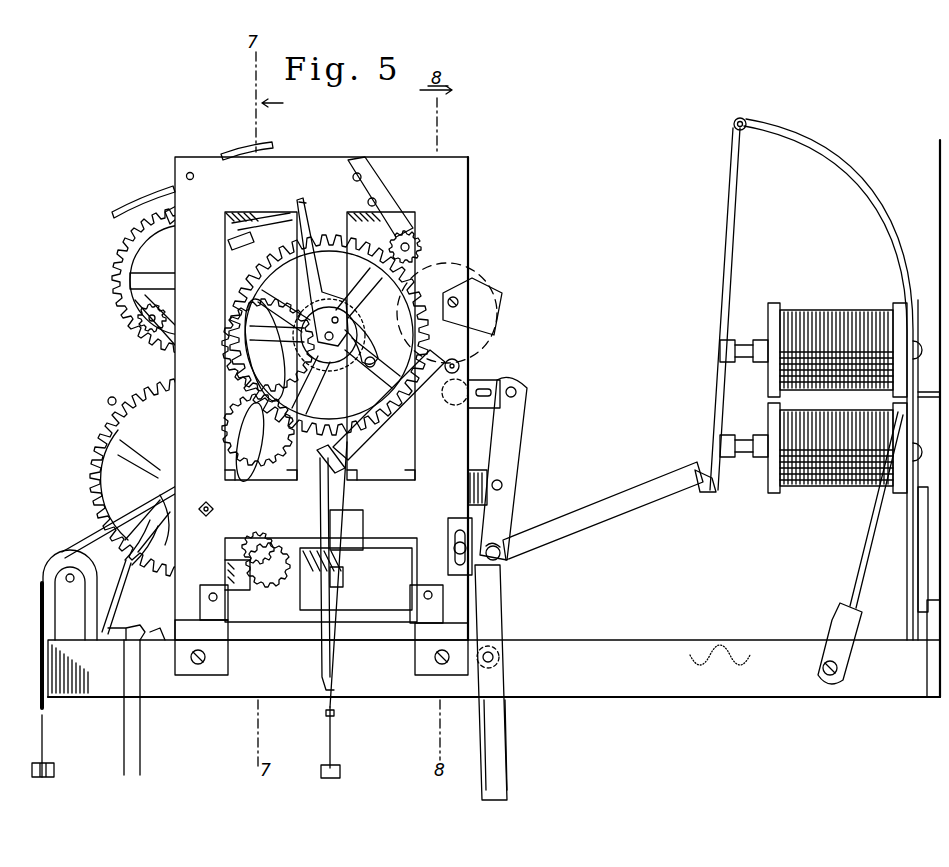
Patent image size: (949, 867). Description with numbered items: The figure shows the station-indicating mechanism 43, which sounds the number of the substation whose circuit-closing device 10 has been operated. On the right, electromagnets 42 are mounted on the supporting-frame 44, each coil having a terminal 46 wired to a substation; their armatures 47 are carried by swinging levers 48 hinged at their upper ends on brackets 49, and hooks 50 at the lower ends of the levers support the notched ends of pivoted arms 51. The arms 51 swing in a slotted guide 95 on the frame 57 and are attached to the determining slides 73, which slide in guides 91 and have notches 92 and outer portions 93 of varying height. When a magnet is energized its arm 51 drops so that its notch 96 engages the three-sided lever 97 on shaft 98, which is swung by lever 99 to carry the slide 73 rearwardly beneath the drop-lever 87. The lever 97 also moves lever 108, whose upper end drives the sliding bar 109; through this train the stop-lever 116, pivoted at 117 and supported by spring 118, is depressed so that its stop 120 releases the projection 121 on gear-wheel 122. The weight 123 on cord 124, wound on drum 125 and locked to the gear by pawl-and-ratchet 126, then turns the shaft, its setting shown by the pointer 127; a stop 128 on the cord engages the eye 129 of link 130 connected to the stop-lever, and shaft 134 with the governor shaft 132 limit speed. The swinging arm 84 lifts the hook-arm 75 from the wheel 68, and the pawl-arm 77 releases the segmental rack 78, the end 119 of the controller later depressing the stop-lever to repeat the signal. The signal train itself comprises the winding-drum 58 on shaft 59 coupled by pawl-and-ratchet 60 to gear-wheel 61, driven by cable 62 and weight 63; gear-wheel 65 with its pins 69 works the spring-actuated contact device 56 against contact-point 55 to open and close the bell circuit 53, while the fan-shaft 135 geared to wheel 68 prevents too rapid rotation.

The fan-shaft 135 is at (195, 172).
The hook-arm 75 is at (178, 215).
The rotary wheel or gear 68 is at (114, 266).
The swinging arm 84 is at (258, 212).
The pointer or hand 127 is at (310, 208).
The pawl-arm 77 is at (252, 240).
The shaft 134 is at (414, 253).
The frame 57 is at (335, 398).
The shaft 132 is at (470, 285).
The drum 125 is at (372, 322).
The pawl-and-ratchet connection 126 is at (334, 300).
The gear-wheel 61 is at (102, 489).
The segmental rack 78 is at (232, 333).
The gear-wheel 122 is at (233, 362).
The gear-wheel 65 is at (104, 383).
The projections or pins 69 is at (111, 406).
The winding-drum 58 is at (176, 505).
The shaft 59 is at (212, 509).
The pawl-and-ratchet connection 60 is at (168, 530).
The circuit-closing devices 10 is at (133, 588).
The contact-point 55 is at (140, 633).
The spring-actuated contact device 56 is at (122, 643).
The outer portions of slides 93 is at (229, 572).
The alining notches or recesses 92 is at (276, 592).
The drop-lever 87 is at (268, 540).
The guides 91 is at (236, 640).
The cable 62 is at (46, 735).
The weight 63 is at (56, 769).
The electric circuit 53 is at (144, 707).
The stop or ball 128 is at (340, 584).
The determining elements or slides 73 is at (321, 580).
The link 130 is at (322, 645).
The eye or loop 129 is at (338, 682).
The cord or cable 124 is at (331, 736).
The weight 123 is at (342, 772).
The projection 121 is at (329, 335).
The end of controller 119 is at (381, 342).
The stop or projection 120 is at (396, 420).
The stop-lever 116 is at (366, 448).
The pivot 117 is at (462, 370).
The sliding bar 109 is at (500, 380).
The spring 118 is at (485, 442).
The lever 108 is at (516, 432).
The slotted guide 95 is at (452, 540).
The notch or recess 96 is at (501, 548).
The pivoted arms 51 is at (603, 511).
The projecting lever 97 is at (501, 682).
The shaft 98 is at (498, 648).
The lever 99 is at (508, 745).
The swinging levers 48 is at (722, 259).
The supporting arms or brackets 49 is at (878, 201).
The electromagnets 42 is at (832, 310).
The armatures 47 is at (731, 434).
The projections or hooks 50 is at (714, 493).
The supporting-frame 44 is at (903, 565).
The terminal 46 is at (918, 600).
The mechanism 43 is at (494, 657).